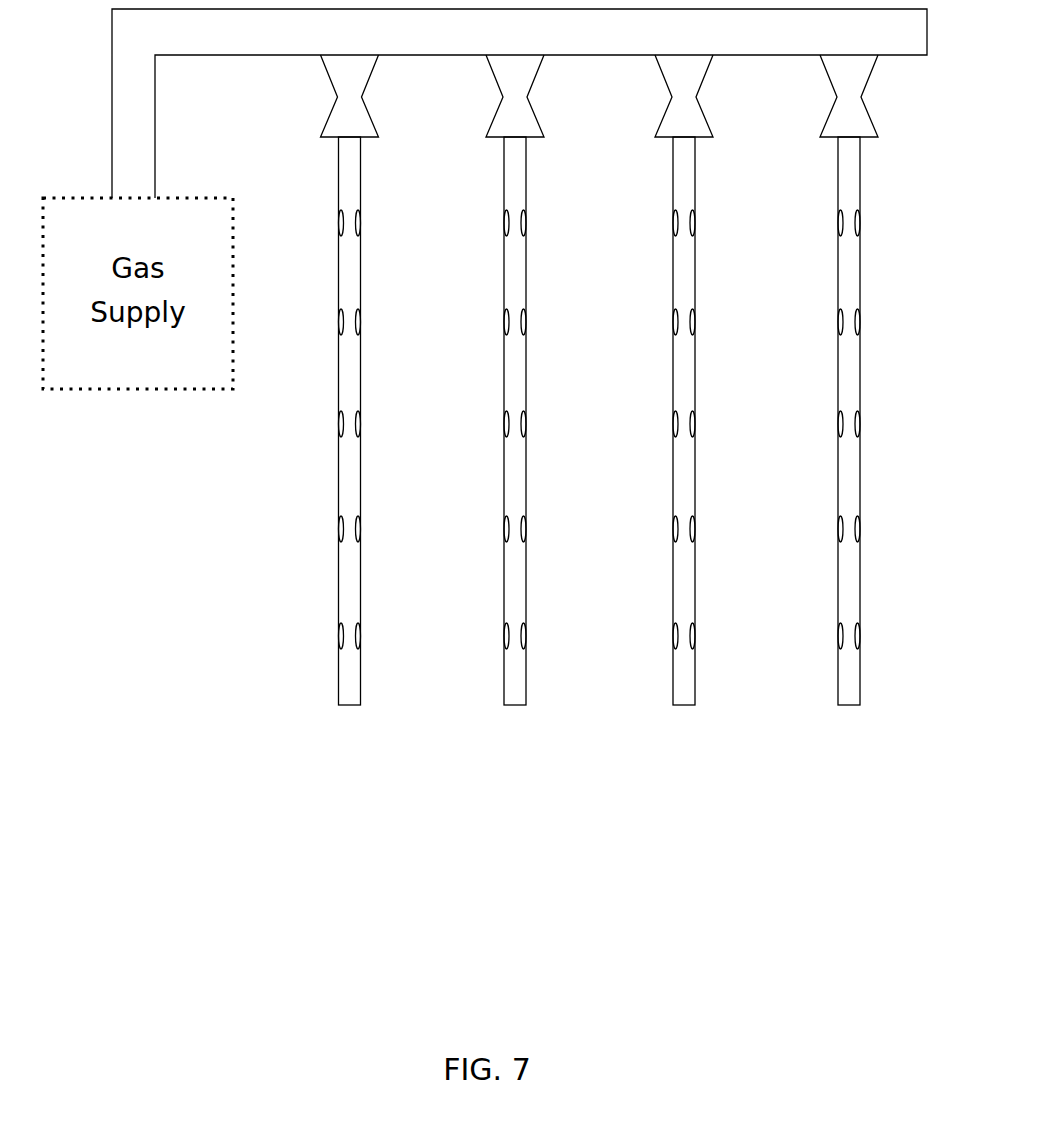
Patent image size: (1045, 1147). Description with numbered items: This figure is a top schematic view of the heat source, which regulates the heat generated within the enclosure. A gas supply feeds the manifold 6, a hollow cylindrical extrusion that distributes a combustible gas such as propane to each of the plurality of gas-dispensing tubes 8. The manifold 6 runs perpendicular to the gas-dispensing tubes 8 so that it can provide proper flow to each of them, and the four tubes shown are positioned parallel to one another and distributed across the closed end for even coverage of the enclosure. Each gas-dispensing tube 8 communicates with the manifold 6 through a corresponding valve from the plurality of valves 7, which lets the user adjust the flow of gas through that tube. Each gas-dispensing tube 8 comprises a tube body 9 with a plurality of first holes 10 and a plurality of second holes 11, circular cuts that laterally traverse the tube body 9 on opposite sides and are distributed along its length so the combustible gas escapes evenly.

The manifold 6 is at (256, 47).
The plurality of valves 7 is at (341, 128).
The plurality of gas-dispensing tubes 8 is at (292, 762).
The tube body 9 is at (348, 470).
The plurality of first holes 10 is at (338, 223).
The plurality of second holes 11 is at (360, 323).